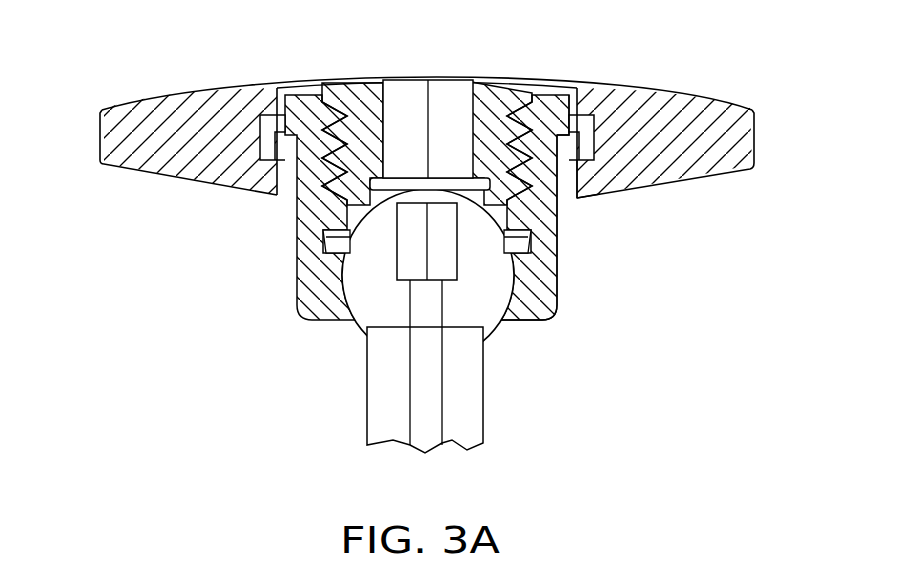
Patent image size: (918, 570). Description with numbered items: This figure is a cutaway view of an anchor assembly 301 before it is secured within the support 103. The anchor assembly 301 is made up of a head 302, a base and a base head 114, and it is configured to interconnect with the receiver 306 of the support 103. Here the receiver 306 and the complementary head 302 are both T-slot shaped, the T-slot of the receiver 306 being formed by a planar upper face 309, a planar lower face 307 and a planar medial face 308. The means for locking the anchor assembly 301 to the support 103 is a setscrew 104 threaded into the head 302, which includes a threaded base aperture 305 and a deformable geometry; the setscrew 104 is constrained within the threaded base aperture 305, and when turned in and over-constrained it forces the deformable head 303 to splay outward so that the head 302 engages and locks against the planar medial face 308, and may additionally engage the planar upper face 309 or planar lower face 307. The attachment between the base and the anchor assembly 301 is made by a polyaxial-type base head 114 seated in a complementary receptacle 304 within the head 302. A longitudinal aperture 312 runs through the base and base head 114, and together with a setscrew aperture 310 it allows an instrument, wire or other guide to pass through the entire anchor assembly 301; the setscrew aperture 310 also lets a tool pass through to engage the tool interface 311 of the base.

The support 103 is at (116, 86).
The setscrew 104 is at (362, 92).
The base head 114 is at (477, 320).
The anchor assembly 301 is at (561, 312).
The head 302 is at (293, 228).
The deformable head 303 is at (278, 162).
The receptacle 304 is at (297, 292).
The threaded base aperture 305 is at (553, 218).
The receiver 306 is at (253, 142).
The planar lower face 307 is at (603, 188).
The planar medial face 308 is at (588, 120).
The planar upper face 309 is at (597, 88).
The setscrew aperture 310 is at (407, 90).
The tool interface 311 is at (413, 263).
The longitudinal aperture 312 is at (422, 398).